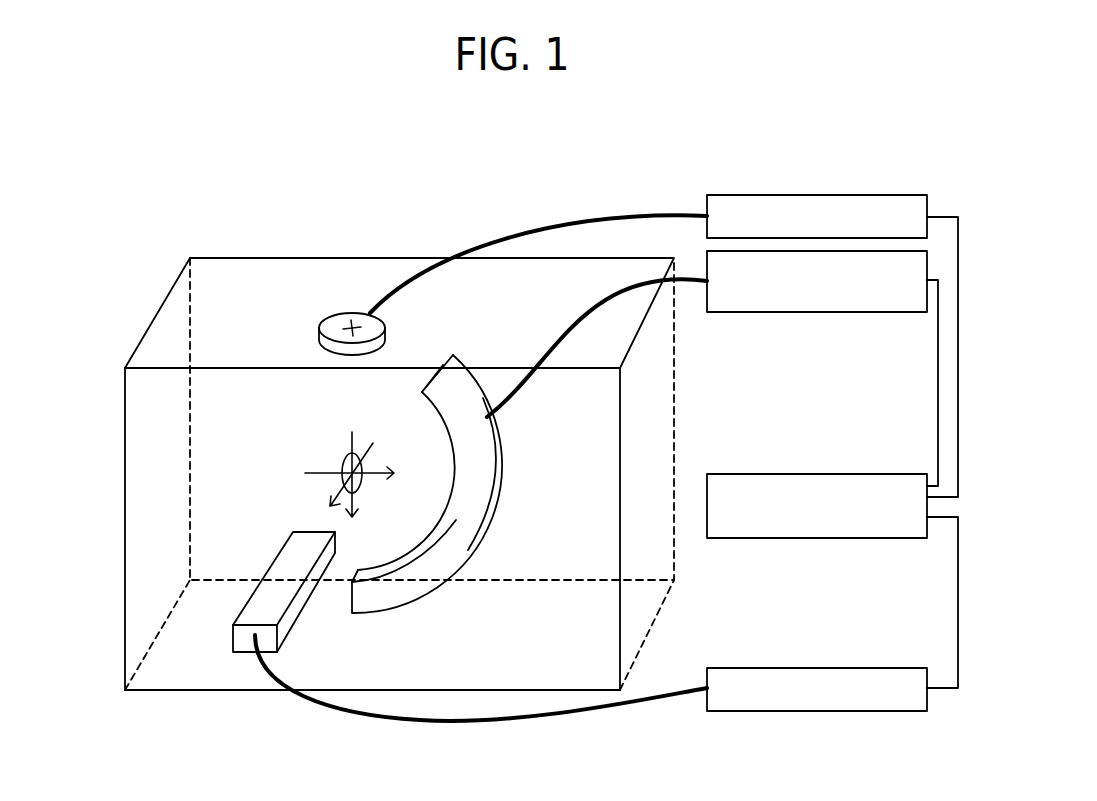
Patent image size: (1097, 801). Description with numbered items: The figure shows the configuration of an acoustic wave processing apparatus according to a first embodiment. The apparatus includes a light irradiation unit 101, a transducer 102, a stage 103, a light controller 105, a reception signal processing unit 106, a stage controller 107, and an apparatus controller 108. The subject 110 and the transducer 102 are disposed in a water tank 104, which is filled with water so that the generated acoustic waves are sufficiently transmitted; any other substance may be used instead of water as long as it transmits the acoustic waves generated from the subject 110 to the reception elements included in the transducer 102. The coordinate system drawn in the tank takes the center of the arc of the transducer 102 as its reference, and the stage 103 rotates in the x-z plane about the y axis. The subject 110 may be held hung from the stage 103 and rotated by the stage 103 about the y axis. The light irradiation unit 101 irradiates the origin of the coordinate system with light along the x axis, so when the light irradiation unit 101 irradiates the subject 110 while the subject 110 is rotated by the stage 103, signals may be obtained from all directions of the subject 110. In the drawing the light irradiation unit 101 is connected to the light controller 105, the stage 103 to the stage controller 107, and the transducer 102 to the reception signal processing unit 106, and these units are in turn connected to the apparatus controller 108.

The light irradiation unit 101 is at (292, 612).
The transducer 102 is at (497, 467).
The stage 103 is at (321, 322).
The water tank 104 is at (125, 580).
The light controller 105 is at (775, 668).
The reception signal processing unit 106 is at (762, 312).
The stage controller 107 is at (788, 195).
The apparatus controller 108 is at (774, 474).
The subject 110 is at (340, 466).